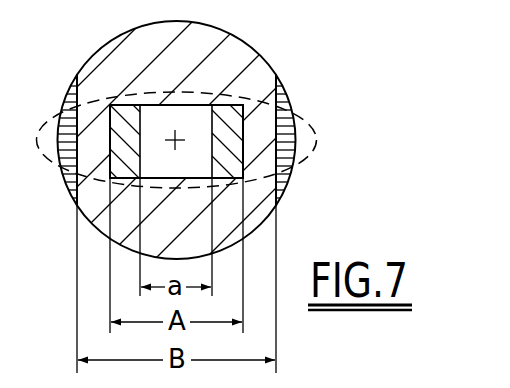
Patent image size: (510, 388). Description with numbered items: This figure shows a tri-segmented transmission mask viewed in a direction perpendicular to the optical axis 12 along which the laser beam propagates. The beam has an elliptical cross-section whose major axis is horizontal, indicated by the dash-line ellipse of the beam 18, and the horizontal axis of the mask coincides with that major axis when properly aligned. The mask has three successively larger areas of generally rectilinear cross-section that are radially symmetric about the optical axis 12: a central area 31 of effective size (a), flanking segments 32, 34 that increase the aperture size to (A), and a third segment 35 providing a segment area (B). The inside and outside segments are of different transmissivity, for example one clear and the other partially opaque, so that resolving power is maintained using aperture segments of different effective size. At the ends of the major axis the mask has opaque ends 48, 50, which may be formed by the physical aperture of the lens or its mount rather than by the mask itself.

The optical axis 12 is at (178, 132).
The elliptical beam 18 is at (305, 122).
The central area 31 is at (150, 112).
The segment 32 is at (62, 108).
The segment 34 is at (237, 156).
The third segment 35 is at (235, 57).
The opaque end 48 is at (65, 186).
The opaque end 50 is at (287, 186).